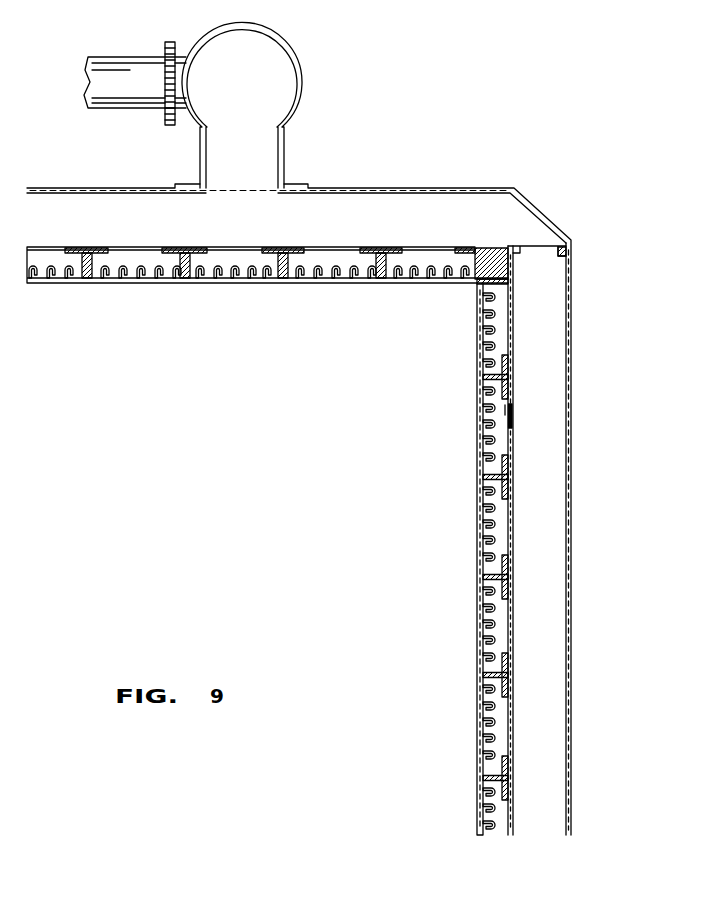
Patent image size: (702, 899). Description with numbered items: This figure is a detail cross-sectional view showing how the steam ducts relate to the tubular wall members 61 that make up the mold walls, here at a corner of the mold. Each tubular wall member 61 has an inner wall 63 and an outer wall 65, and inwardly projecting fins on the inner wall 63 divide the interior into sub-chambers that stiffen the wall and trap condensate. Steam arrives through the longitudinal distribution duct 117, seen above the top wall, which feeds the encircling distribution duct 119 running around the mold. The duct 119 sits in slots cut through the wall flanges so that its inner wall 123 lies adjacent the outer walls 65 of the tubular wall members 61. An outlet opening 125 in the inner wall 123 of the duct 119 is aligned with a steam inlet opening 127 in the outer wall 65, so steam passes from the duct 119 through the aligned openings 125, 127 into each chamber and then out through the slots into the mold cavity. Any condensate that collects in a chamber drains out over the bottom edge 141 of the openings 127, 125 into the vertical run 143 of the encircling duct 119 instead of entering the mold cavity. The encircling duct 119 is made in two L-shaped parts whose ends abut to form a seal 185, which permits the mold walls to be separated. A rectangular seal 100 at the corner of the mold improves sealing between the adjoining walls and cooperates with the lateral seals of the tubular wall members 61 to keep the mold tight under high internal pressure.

The tubular wall member 61 is at (477, 630).
The inner wall 63 is at (480, 537).
The outer wall 65 is at (490, 372).
The rectangular seal 100 is at (493, 248).
The longitudinal distribution duct 117 is at (300, 62).
The encircling distribution duct 119 is at (379, 190).
The inner wall of duct 123 is at (288, 249).
The outlet opening 125 is at (513, 428).
The steam inlet opening 127 is at (506, 409).
The bottom edge 141 is at (511, 348).
The vertical run 143 is at (571, 530).
The seal 185 is at (540, 247).